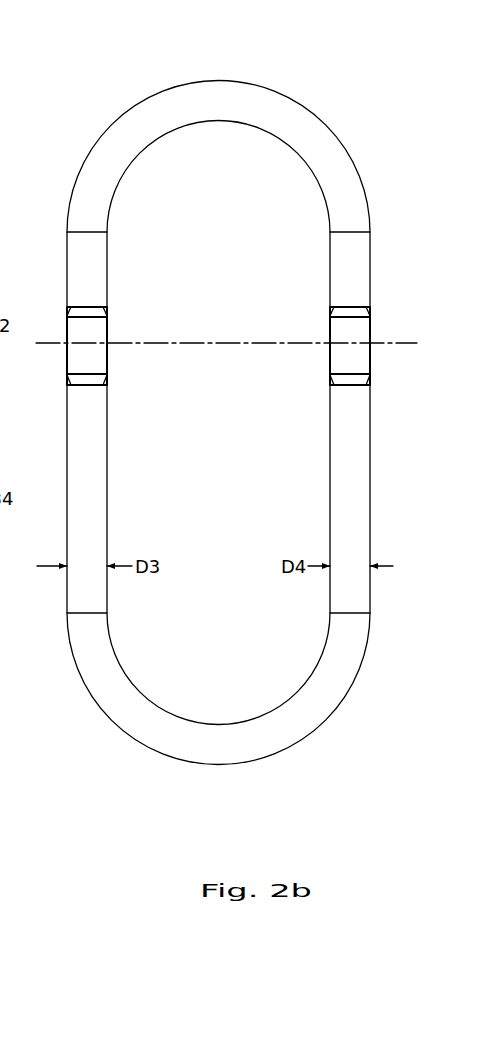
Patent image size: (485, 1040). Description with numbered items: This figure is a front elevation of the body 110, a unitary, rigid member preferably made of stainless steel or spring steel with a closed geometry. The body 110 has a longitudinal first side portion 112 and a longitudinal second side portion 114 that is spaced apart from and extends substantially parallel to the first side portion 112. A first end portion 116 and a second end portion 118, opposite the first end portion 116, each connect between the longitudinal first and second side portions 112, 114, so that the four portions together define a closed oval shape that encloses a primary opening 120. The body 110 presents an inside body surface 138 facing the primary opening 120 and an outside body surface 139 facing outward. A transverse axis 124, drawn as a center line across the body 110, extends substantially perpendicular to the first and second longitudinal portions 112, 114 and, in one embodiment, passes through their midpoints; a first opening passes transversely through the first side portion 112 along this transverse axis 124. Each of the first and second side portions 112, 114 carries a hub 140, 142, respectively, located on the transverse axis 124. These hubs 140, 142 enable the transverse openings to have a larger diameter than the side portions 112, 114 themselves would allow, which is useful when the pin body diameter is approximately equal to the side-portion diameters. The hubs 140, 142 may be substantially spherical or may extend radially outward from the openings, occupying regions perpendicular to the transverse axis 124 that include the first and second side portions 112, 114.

The body 110 is at (100, 78).
The longitudinal first side portion 112 is at (100, 482).
The longitudinal second side portion 114 is at (352, 455).
The first end portion 116 is at (215, 95).
The second end portion 118 is at (226, 753).
The primary opening 120 is at (238, 261).
The transverse axis 124 is at (182, 344).
The inside body surface 138 is at (118, 188).
The outside body surface 139 is at (74, 193).
The hub 140 is at (97, 328).
The hub 142 is at (360, 328).